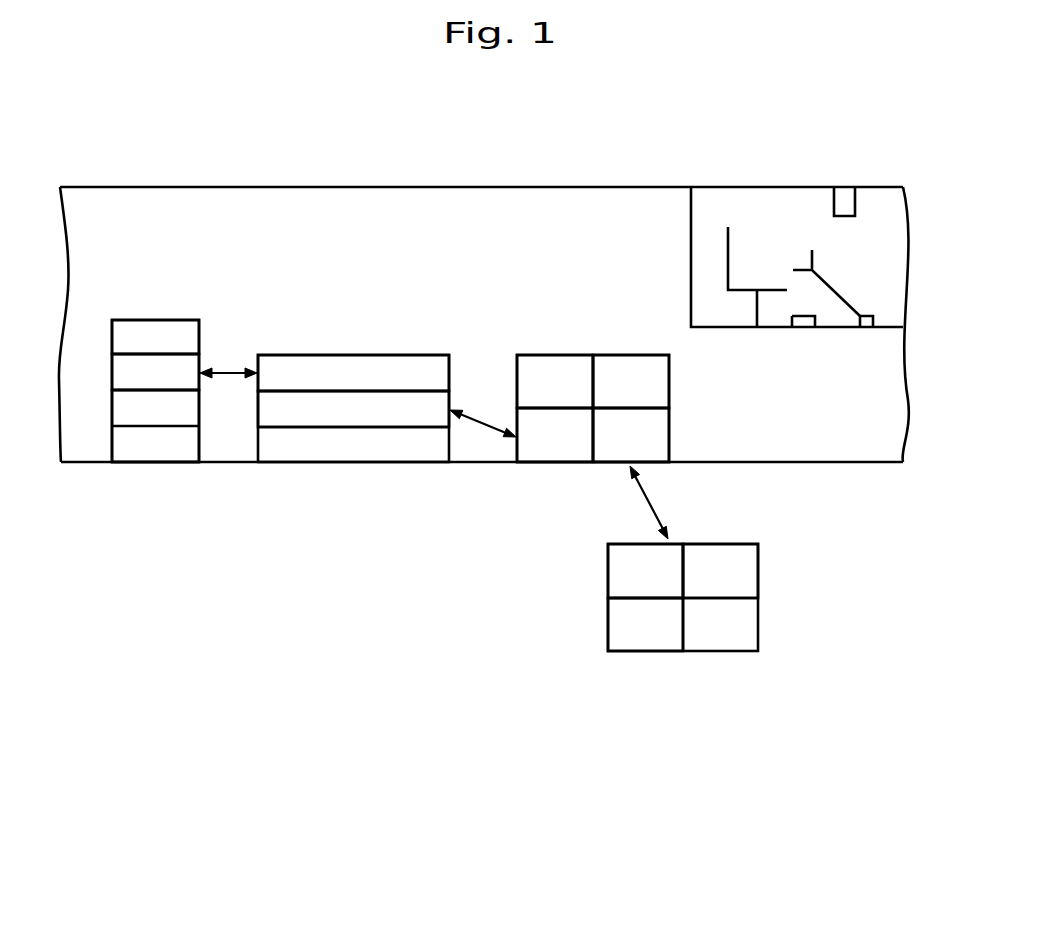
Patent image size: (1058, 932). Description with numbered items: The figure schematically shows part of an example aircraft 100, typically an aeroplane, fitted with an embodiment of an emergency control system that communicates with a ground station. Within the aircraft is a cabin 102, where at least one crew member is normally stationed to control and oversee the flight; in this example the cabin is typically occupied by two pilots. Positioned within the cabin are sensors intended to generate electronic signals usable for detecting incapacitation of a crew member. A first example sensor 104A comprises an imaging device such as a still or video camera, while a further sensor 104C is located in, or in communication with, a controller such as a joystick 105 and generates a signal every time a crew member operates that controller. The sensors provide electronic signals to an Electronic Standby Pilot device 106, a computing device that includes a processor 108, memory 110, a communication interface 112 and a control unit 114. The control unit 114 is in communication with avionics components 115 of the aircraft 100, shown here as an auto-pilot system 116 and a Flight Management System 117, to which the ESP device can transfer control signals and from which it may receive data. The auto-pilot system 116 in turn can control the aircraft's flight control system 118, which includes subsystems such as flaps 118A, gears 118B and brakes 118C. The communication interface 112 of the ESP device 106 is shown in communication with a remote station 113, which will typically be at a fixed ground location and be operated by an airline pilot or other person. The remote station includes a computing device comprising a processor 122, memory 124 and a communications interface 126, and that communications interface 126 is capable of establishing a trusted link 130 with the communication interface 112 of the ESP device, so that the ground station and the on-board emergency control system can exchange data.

The aircraft 100 is at (510, 187).
The cabin 102 is at (795, 230).
The first example sensor 104A is at (843, 198).
The sensor 104C is at (863, 328).
The joystick 105 is at (841, 295).
The Electronic Standby Pilot device 106 is at (600, 328).
The processor 108 is at (555, 373).
The memory 110 is at (635, 373).
The communication interface 112 is at (650, 430).
The control unit 114 is at (542, 440).
The avionics components 115 is at (362, 328).
The auto-pilot system 116 is at (312, 368).
The Flight Management System 117 is at (413, 403).
The flight control system 118 is at (159, 298).
The flaps 118A is at (137, 335).
The gears 118B is at (177, 365).
The brakes 118C is at (153, 408).
The remote station 113 is at (682, 672).
The processor 122 is at (627, 630).
The memory 124 is at (738, 577).
The communications interface 126 is at (627, 572).
The trusted link 130 is at (647, 497).